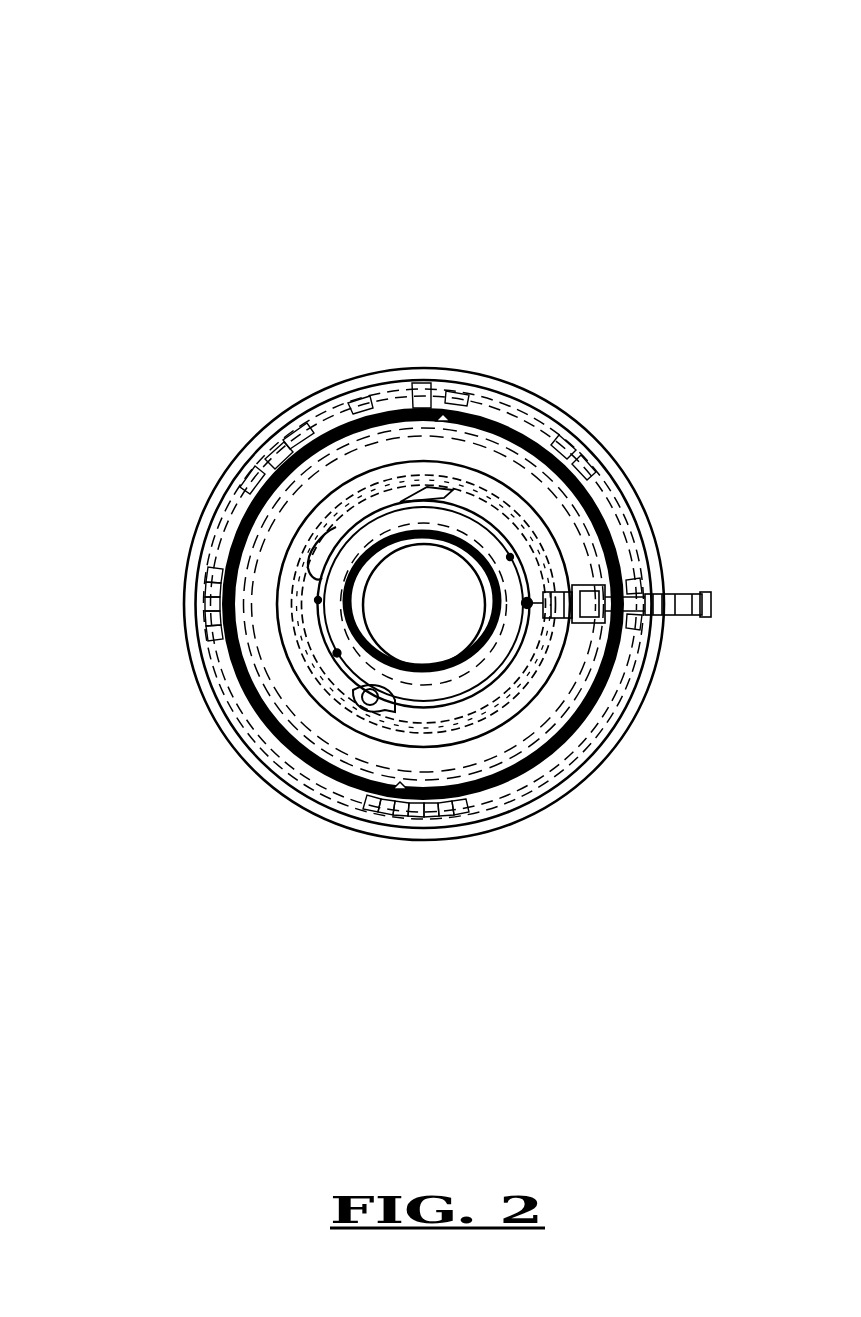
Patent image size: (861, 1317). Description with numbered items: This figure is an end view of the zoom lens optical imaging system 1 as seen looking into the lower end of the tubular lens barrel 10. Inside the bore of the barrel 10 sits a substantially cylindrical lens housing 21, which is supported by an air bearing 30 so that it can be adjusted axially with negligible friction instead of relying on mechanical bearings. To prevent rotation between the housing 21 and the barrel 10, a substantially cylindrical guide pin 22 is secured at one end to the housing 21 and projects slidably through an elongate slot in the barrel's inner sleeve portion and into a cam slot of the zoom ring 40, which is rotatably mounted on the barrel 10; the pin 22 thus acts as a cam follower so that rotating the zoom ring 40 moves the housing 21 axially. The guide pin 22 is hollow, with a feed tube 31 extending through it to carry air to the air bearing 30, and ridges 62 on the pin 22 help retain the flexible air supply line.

The zoom lens optical imaging system 1 is at (112, 134).
The tubular lens barrel 10 is at (560, 430).
The lens housing 21 is at (287, 630).
The guide pin 22 is at (715, 582).
The air bearing 30 is at (260, 572).
The feed tube 31 is at (580, 598).
The zoom ring 40 is at (305, 397).
The ridges 62 is at (694, 618).